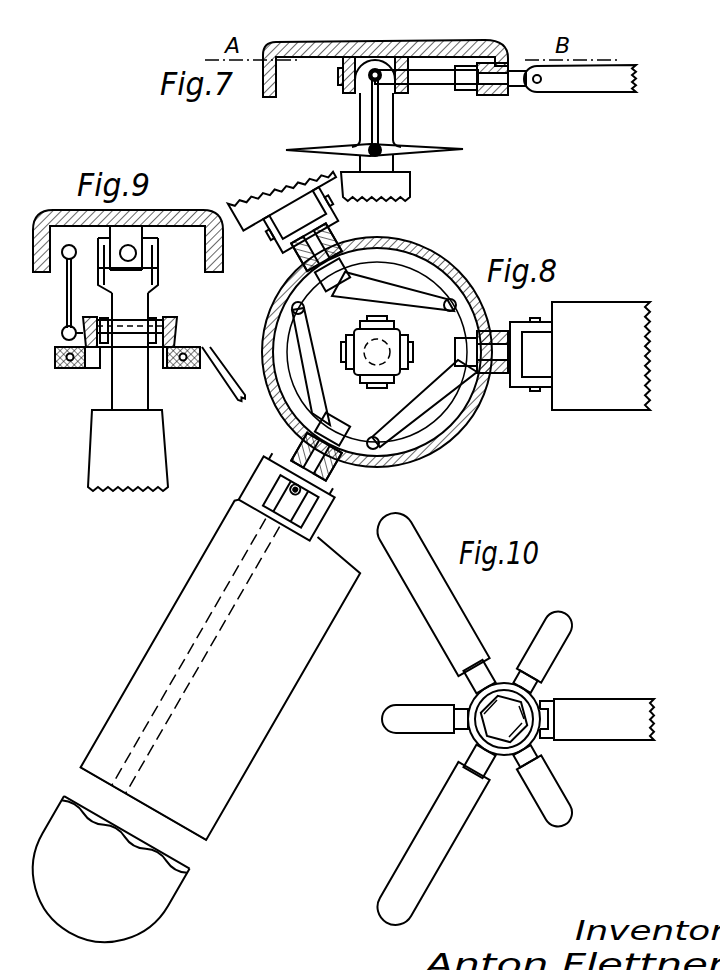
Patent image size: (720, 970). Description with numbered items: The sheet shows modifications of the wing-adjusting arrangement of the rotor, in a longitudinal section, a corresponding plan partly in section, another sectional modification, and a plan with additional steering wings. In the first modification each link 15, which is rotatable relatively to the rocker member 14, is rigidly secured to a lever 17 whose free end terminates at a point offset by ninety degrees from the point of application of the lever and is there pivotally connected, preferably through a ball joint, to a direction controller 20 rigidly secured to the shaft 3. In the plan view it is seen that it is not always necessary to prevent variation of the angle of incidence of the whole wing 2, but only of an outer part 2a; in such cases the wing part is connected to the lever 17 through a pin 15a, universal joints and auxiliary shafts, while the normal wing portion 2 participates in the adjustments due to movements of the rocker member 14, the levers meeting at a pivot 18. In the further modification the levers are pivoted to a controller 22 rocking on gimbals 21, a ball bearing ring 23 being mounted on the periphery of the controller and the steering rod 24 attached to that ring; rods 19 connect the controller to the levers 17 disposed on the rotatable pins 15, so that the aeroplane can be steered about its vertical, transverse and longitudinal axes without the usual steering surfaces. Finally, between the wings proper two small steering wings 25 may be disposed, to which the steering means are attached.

In FIG. 7, the wing 2 is at (607, 78).
In FIG. 8, the wing 2 is at (567, 395).
In FIG. 10, the wing 2 is at (467, 639).
In FIG. 8, the outer part of the wing 2a is at (153, 836).
In FIG. 7, the shaft 3 is at (407, 177).
In FIG. 9, the shaft 3 is at (127, 388).
In FIG. 7, the rocker member 14 is at (410, 42).
In FIG. 7, the link 15 is at (498, 80).
In FIG. 8, the link 15 is at (488, 363).
In FIG. 8, the pin 15a is at (312, 453).
In FIG. 7, the lever 17 is at (425, 78).
In FIG. 8, the lever 17 is at (420, 403).
In FIG. 8, the arm pivot 18 is at (376, 436).
In FIG. 7, the rod 19 is at (372, 113).
In FIG. 9, the rod 19 is at (67, 302).
In FIG. 7, the direction controller 20 is at (457, 149).
In FIG. 9, the gimbals 21 is at (153, 323).
In FIG. 9, the controller 22 is at (176, 333).
In FIG. 9, the ball bearing ring 23 is at (183, 373).
In FIG. 9, the steering rod 24 is at (222, 368).
In FIG. 10, the steering wing 25 is at (539, 777).